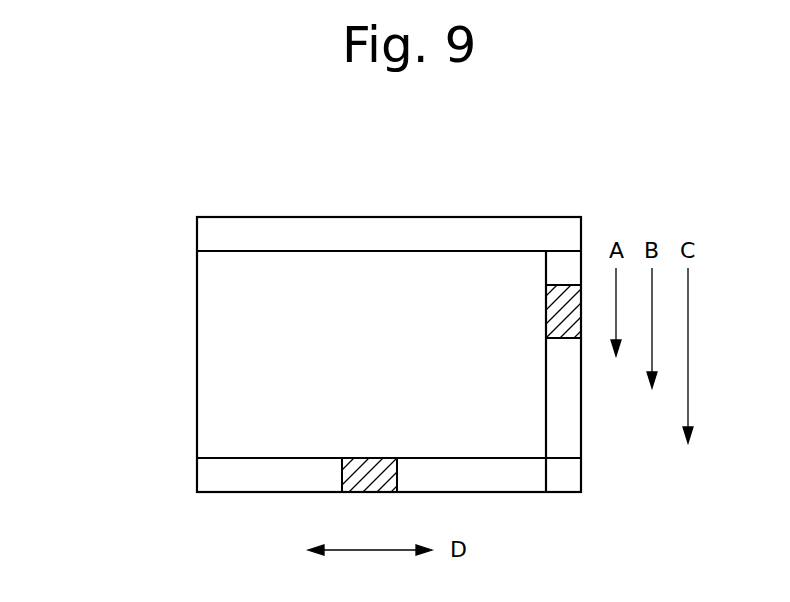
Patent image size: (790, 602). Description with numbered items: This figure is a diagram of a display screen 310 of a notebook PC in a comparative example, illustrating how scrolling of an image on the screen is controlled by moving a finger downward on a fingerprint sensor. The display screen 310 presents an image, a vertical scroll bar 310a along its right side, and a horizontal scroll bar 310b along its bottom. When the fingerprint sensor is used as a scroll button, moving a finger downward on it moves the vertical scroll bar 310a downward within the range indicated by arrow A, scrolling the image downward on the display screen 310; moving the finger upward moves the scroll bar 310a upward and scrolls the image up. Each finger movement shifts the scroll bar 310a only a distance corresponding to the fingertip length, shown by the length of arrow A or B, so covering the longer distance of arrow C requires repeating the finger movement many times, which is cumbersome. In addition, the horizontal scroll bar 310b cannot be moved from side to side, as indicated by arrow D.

The display screen 310 is at (392, 178).
The vertical scroll bar 310a is at (563, 340).
The horizontal scroll bar 310b is at (343, 470).